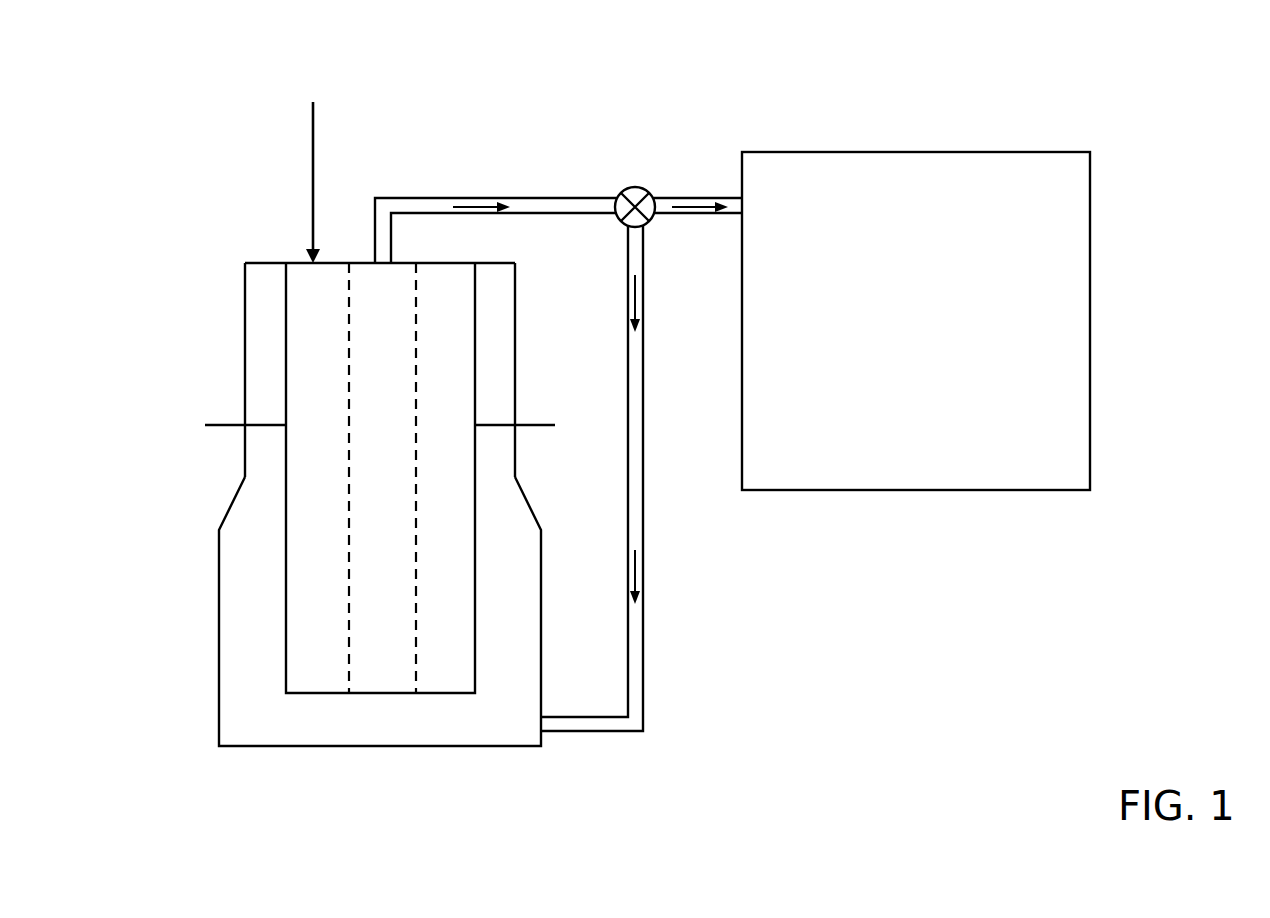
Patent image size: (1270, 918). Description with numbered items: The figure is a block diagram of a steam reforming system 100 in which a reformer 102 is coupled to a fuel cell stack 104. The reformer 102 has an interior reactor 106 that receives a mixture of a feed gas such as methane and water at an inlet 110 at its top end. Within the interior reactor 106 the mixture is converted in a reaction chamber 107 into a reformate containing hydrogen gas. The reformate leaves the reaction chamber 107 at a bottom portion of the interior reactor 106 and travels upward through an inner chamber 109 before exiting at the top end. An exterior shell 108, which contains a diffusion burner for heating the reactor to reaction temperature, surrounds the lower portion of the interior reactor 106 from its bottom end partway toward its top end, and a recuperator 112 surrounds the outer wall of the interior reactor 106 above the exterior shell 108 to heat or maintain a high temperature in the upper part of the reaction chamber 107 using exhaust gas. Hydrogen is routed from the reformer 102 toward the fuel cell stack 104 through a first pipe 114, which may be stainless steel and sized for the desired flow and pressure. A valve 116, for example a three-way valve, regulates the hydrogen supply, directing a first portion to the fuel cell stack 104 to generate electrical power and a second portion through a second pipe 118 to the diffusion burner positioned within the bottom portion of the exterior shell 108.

The system 100 is at (662, 67).
The reformer 102 is at (256, 244).
The fuel cell stack 104 is at (896, 346).
The interior reactor 106 is at (286, 527).
The reaction chamber 107 is at (337, 496).
The exterior shell 108 is at (219, 653).
The inner chamber 109 is at (404, 430).
The inlet 110 is at (311, 186).
The recuperator 112 is at (245, 370).
The first pipe 114 is at (505, 197).
The valve 116 is at (632, 187).
The second pipe 118 is at (643, 446).